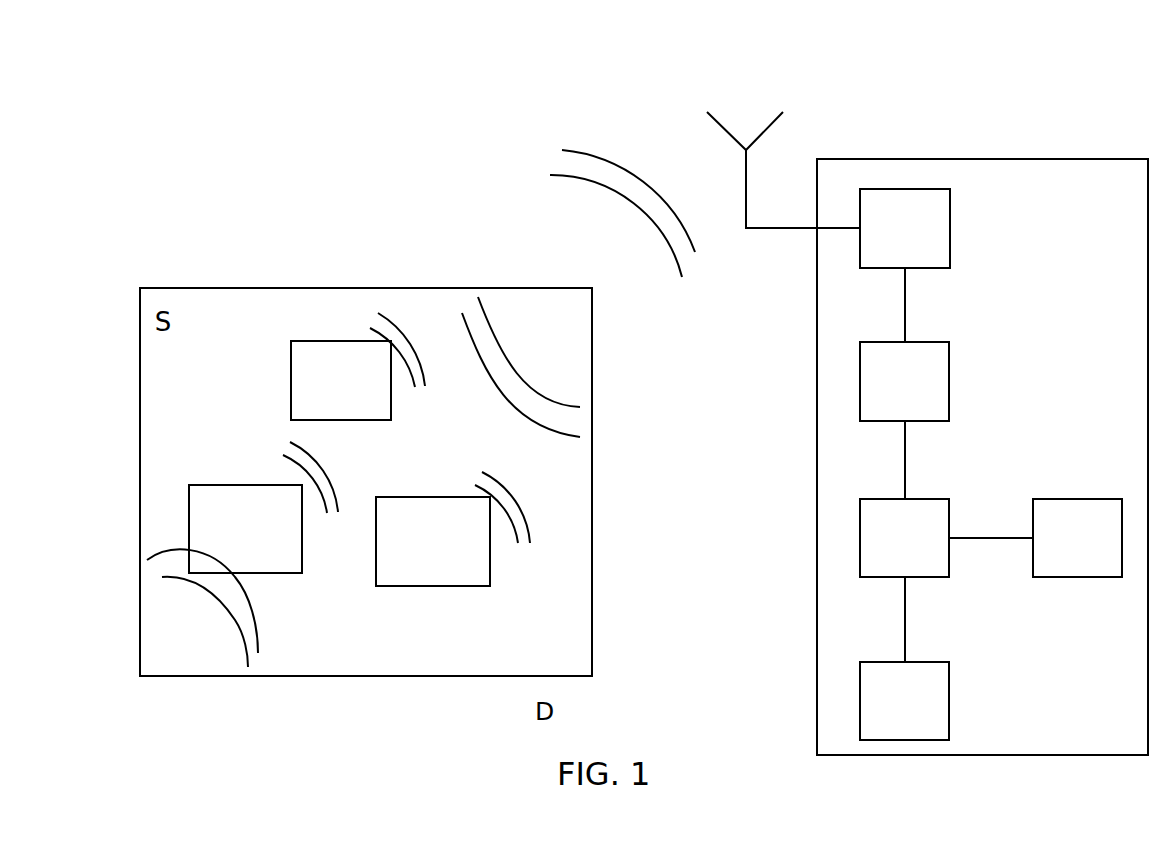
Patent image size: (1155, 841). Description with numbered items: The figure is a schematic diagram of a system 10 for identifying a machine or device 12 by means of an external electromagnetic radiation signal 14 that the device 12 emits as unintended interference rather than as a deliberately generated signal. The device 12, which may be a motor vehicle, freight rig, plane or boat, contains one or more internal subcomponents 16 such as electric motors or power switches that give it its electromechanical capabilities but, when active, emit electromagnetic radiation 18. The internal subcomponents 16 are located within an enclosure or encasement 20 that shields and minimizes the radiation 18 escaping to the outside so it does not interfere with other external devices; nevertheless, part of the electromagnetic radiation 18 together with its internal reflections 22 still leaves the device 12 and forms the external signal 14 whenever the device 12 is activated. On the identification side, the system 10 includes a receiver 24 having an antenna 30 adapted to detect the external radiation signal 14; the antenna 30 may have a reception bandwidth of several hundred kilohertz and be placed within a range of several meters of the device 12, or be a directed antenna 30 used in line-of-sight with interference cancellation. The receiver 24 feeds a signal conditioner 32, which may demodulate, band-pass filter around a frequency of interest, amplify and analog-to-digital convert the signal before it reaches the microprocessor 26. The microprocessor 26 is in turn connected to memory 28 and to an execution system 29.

The system 10 is at (1003, 137).
The device 12 is at (215, 262).
The external electromagnetic radiation signal 14 is at (667, 237).
The internal subcomponents 16 is at (322, 340).
The electromagnetic radiation 18 is at (422, 347).
The enclosure or encasement 20 is at (350, 288).
The internal reflections 22 is at (497, 343).
The receiver 24 is at (893, 189).
The microprocessor 26 is at (893, 499).
The memory 28 is at (1065, 499).
The execution system 29 is at (893, 662).
The antenna 30 is at (777, 118).
The signal conditioner 32 is at (892, 342).